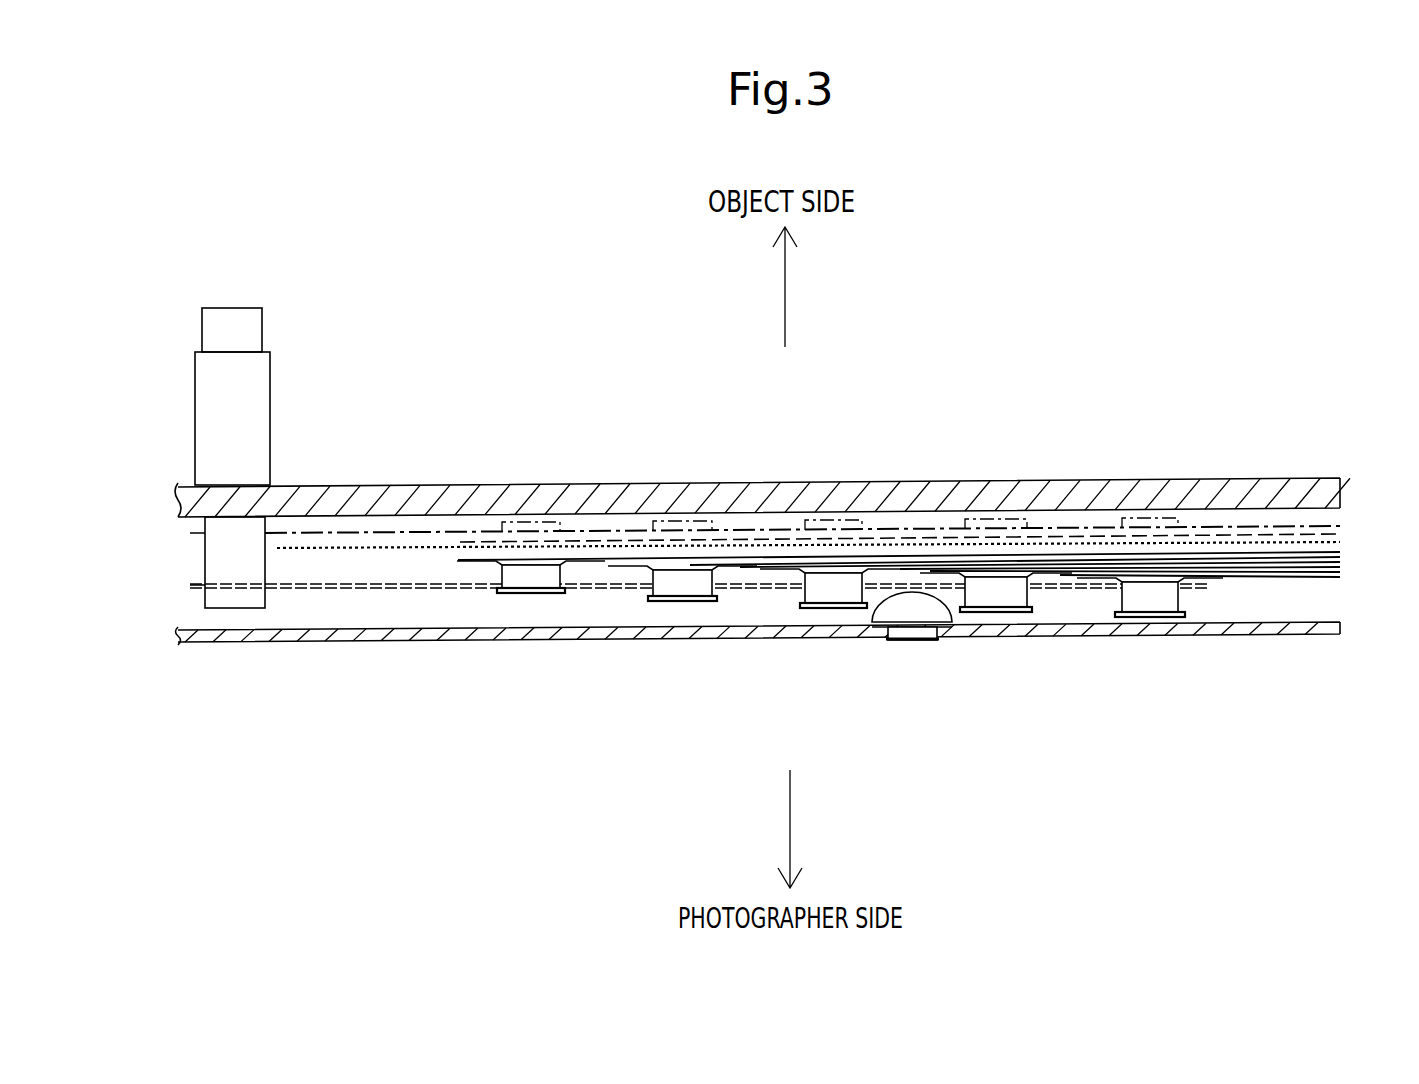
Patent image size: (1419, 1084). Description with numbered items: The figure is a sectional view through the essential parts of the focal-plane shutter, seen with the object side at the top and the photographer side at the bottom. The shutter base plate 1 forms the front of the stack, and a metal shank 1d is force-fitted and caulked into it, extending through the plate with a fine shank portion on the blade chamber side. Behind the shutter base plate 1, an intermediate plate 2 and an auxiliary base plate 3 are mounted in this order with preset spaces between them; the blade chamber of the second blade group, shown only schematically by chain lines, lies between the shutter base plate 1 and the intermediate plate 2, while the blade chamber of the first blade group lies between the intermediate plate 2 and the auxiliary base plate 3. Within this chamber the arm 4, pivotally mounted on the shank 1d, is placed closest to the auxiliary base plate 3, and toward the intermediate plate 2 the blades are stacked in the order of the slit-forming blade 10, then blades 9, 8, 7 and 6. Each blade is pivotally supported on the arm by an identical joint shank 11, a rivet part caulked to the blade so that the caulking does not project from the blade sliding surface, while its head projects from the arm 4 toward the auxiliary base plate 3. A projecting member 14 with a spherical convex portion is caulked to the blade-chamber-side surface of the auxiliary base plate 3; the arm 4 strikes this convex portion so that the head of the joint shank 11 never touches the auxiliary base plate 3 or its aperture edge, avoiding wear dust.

The shutter base plate 1 is at (1308, 483).
The shank 1d is at (258, 395).
The intermediate plate 2 is at (1340, 526).
The auxiliary base plate 3 is at (1305, 632).
The arm 4 is at (368, 598).
The blade 6 is at (592, 562).
The blade 7 is at (742, 568).
The blade 8 is at (776, 568).
The blade 9 is at (1046, 578).
The slit-forming blade 10 is at (1240, 578).
The joint shank 11 is at (525, 592).
The projecting member 14 is at (920, 607).